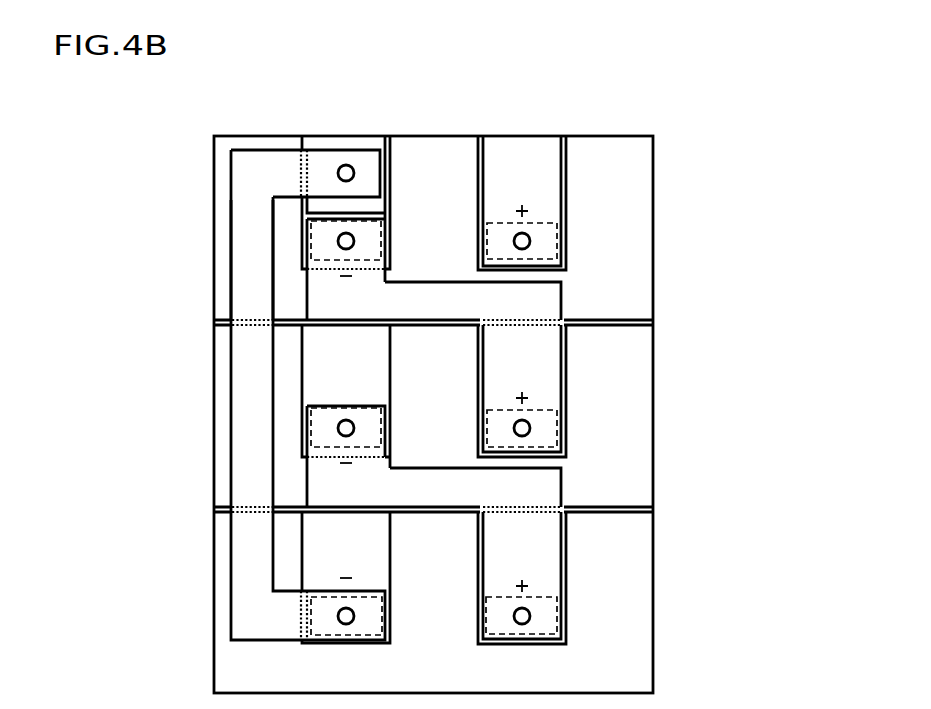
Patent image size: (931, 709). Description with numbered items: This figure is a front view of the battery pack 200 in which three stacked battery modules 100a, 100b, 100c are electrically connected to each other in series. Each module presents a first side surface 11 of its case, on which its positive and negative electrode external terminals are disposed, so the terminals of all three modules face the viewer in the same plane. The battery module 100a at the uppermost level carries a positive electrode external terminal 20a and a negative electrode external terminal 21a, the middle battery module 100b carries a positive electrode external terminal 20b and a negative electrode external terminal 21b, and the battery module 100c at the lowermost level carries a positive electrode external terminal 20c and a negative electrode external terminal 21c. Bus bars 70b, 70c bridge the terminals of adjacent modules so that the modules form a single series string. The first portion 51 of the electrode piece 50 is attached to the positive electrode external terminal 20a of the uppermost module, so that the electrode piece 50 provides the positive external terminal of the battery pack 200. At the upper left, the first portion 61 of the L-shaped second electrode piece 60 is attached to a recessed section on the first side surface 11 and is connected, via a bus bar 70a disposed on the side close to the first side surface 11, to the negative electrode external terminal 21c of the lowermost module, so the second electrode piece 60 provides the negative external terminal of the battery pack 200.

The battery pack 200 is at (709, 101).
The battery module 100a is at (653, 158).
The battery module 100b is at (653, 350).
The battery module 100c is at (653, 527).
The first side surface 11 is at (225, 169).
The second electrode piece 60 is at (358, 136).
The first portion 61 is at (300, 135).
The electrode piece 50 is at (542, 136).
The first portion 51 is at (545, 178).
The positive electrode external terminal 20a is at (550, 236).
The positive electrode external terminal 20b is at (547, 423).
The positive electrode external terminal 20c is at (548, 618).
The negative electrode external terminal 21a is at (326, 238).
The negative electrode external terminal 21b is at (326, 434).
The negative electrode external terminal 21c is at (326, 631).
The bus bar 70a is at (242, 294).
The bus bar 70b is at (545, 568).
The bus bar 70c is at (548, 302).